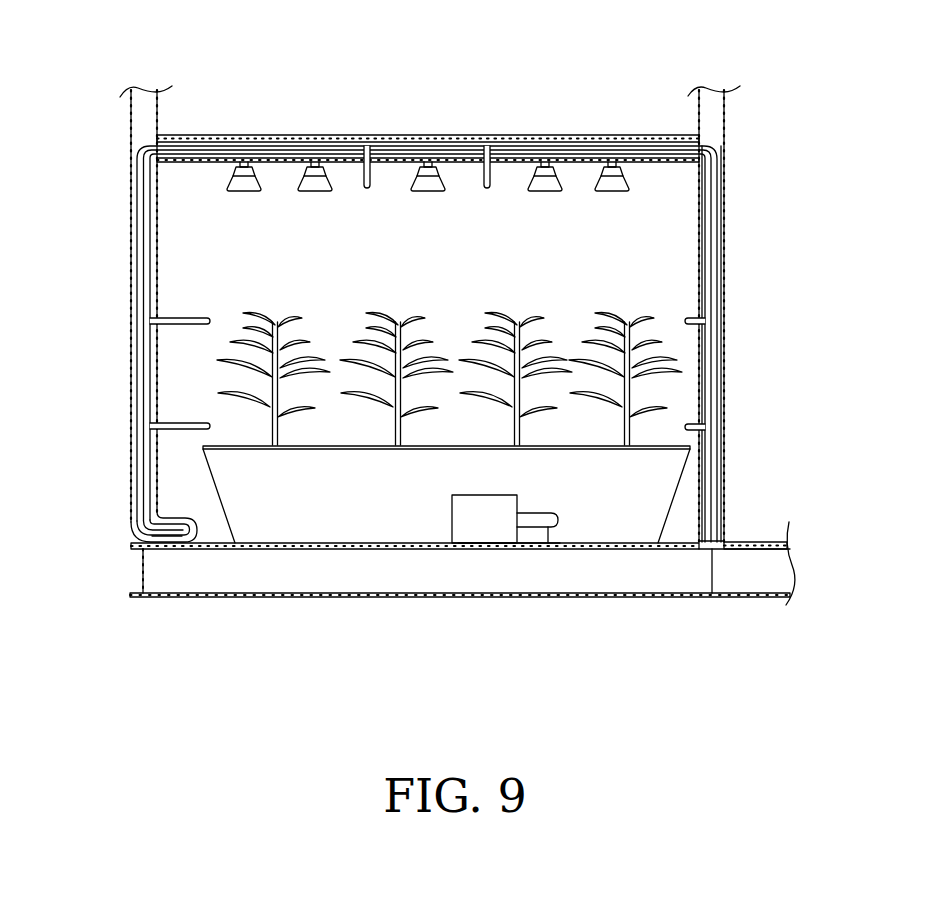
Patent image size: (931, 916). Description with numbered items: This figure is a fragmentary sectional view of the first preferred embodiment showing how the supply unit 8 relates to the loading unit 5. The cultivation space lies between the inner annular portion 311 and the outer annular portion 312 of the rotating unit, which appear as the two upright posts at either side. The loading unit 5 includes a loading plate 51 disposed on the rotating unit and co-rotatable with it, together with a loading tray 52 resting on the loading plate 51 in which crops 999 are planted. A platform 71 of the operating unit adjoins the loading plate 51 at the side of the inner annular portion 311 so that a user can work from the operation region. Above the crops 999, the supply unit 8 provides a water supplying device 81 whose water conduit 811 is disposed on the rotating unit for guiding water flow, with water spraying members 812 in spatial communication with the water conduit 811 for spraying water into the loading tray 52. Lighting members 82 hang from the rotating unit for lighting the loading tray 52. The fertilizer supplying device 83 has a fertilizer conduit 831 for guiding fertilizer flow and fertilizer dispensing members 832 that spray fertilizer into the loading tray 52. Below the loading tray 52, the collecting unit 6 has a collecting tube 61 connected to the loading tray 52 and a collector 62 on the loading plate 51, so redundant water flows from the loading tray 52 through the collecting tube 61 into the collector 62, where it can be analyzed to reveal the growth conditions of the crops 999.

The loading unit 5 is at (112, 586).
The loading plate 51 is at (244, 598).
The loading tray 52 is at (378, 533).
The collecting unit 6 is at (469, 555).
The collecting tube 61 is at (548, 546).
The collector 62 is at (455, 510).
The platform 71 is at (761, 543).
The supply unit 8 is at (412, 118).
The water supplying device 81 is at (737, 238).
The water conduit 811 is at (723, 284).
The water spraying member 812 is at (367, 192).
The lighting member 82 is at (431, 194).
The fertilizer supplying device 83 is at (726, 345).
The fertilizer conduit 831 is at (136, 452).
The fertilizer dispensing member 832 is at (181, 424).
The inner annular portion 311 is at (727, 104).
The outer annular portion 312 is at (131, 107).
The crops 999 is at (206, 355).